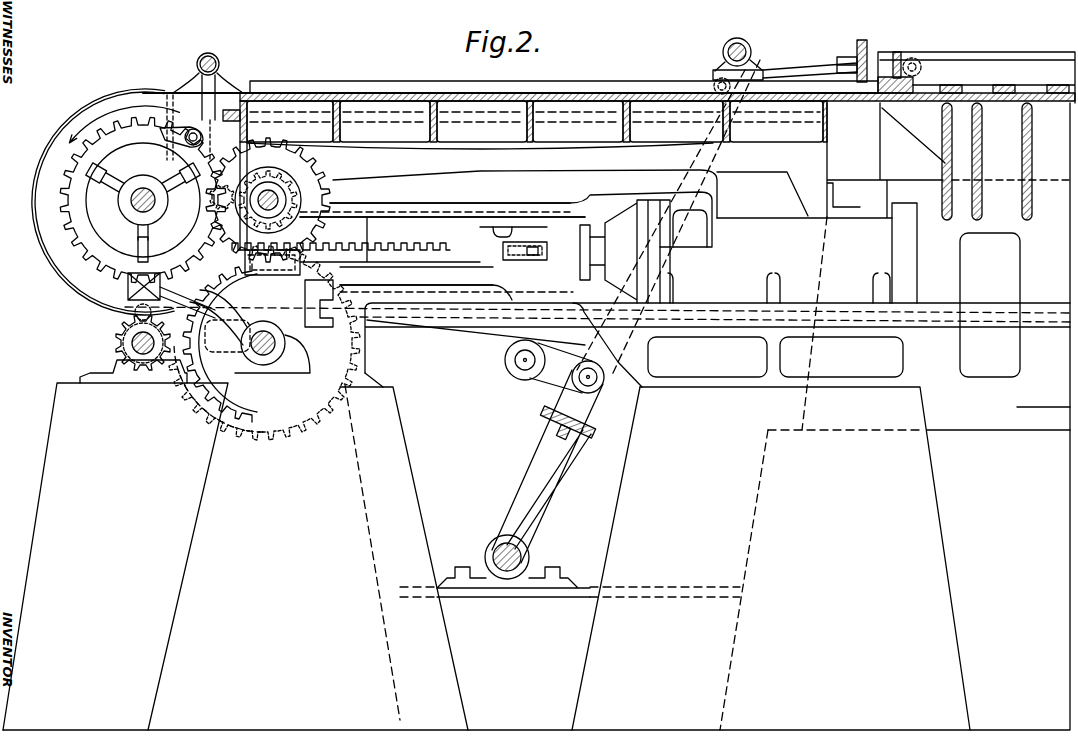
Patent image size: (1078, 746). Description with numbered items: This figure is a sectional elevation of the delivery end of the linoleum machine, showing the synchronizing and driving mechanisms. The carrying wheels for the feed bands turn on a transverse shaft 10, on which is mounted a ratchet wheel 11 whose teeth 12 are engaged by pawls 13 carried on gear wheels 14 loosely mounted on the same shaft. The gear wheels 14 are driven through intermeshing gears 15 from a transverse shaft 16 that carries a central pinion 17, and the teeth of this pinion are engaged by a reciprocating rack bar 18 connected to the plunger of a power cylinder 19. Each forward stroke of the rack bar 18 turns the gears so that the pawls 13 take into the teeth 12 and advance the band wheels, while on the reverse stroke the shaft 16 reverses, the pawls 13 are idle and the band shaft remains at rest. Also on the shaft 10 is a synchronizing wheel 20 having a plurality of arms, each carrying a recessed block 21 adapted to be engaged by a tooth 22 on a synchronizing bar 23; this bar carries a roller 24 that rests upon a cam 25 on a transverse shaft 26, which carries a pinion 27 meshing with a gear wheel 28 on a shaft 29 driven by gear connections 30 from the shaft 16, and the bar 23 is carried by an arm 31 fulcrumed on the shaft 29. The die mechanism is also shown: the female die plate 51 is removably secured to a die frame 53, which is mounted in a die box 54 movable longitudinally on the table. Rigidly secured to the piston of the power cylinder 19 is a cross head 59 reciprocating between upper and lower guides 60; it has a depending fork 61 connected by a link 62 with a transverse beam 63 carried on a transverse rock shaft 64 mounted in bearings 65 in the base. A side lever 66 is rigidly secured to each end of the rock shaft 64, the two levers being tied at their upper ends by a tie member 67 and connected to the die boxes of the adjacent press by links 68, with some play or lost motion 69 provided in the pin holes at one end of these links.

The transverse shaft 10 is at (147, 190).
The ratchet wheel 11 is at (78, 188).
The teeth 12 is at (68, 212).
The pawls 13 is at (187, 133).
The gear wheels 14 is at (170, 140).
The intermeshing gears 15 is at (215, 208).
The transverse shaft 16 is at (288, 200).
The central gear wheel or pinion 17 is at (296, 185).
The reciprocating rack bar 18 is at (385, 245).
The power cylinder 19 is at (539, 395).
The synchronizing wheel 20 is at (44, 243).
The recessed block 21 is at (140, 252).
The tooth 22 is at (140, 265).
The synchronizing bar 23 is at (147, 313).
The roller 24 is at (122, 340).
The cam 25 is at (126, 350).
The transverse shaft 26 is at (137, 360).
The pinion 27 is at (160, 372).
The gear wheel 28 is at (205, 400).
The shaft 29 is at (265, 366).
The gear connections 30 is at (325, 280).
The arm 31 is at (247, 340).
The female die plate 51 is at (983, 85).
The die frame 53 is at (895, 60).
The die box 54 is at (862, 40).
The cross head 59 is at (505, 223).
The guides 60 is at (437, 290).
The depending fork 61 is at (517, 335).
The link 62 is at (557, 375).
The transverse beam 63 is at (597, 417).
The transverse rock shaft 64 is at (522, 558).
The bearings 65 is at (475, 578).
The side lever 66 is at (705, 157).
The tie member 67 is at (751, 52).
The links 68 is at (807, 73).
The play or lost motion 69 is at (918, 60).